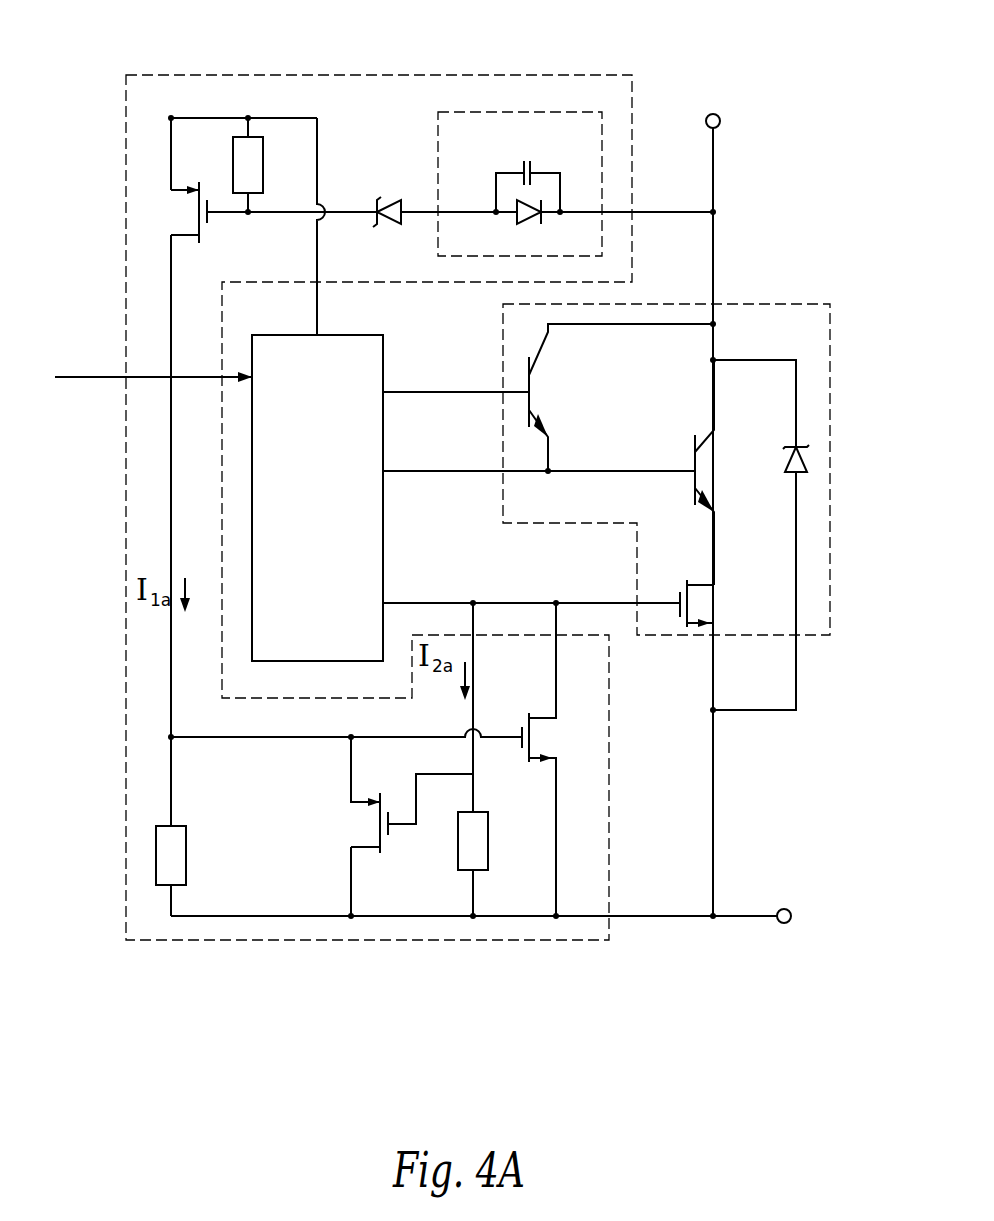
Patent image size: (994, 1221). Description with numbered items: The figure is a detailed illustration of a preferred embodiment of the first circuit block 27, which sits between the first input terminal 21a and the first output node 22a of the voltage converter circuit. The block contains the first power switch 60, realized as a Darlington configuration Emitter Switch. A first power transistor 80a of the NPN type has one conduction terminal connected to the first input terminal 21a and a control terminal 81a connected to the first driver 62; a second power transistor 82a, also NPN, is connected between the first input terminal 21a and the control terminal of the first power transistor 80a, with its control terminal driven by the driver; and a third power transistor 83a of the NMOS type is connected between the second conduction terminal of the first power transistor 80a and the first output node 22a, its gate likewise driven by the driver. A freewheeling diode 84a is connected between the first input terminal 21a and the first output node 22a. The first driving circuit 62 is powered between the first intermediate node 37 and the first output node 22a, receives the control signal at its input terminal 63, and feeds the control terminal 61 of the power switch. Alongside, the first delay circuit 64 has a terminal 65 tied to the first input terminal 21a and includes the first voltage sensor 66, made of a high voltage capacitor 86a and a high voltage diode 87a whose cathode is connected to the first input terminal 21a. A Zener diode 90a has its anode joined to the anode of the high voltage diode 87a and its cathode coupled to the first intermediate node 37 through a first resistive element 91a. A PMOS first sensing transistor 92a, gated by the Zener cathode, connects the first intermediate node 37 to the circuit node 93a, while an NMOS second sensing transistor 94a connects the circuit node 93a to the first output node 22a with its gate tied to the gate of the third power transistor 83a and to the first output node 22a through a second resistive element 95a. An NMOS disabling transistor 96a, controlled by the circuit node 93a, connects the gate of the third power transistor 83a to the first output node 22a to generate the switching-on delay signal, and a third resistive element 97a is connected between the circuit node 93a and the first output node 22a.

The first input terminal 21a is at (716, 213).
The first output node 22a is at (714, 917).
The first circuit block 27 is at (317, 973).
The first intermediate node 37 is at (171, 118).
The first power switch 60 is at (832, 337).
The control terminal 61 is at (450, 395).
The first driving circuit 62 is at (372, 520).
The input terminal 63 is at (95, 376).
The first delay circuit 64 is at (281, 75).
The terminal 65 is at (680, 212).
The first voltage sensor 66 is at (466, 112).
The first power transistor 80a is at (697, 455).
The control terminal 81a is at (490, 475).
The second power transistor 82a is at (532, 360).
The third power transistor 83a is at (685, 620).
The freewheeling diode 84a is at (792, 475).
The high voltage capacitor 86a is at (532, 165).
The high voltage diode 87a is at (533, 222).
The Zener diode 90a is at (386, 206).
The first resistive element 91a is at (243, 172).
The first sensing transistor 92a is at (200, 211).
The circuit node 93a is at (171, 737).
The second sensing transistor 94a is at (380, 822).
The second resistive element 95a is at (465, 840).
The disabling transistor 96a is at (533, 738).
The third resistive element 97a is at (165, 850).